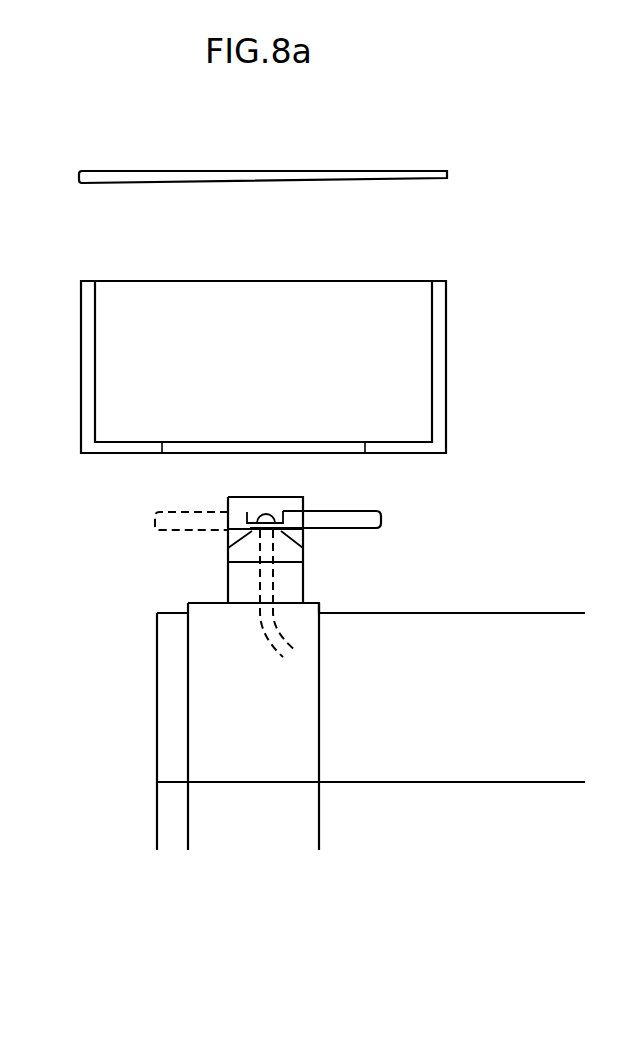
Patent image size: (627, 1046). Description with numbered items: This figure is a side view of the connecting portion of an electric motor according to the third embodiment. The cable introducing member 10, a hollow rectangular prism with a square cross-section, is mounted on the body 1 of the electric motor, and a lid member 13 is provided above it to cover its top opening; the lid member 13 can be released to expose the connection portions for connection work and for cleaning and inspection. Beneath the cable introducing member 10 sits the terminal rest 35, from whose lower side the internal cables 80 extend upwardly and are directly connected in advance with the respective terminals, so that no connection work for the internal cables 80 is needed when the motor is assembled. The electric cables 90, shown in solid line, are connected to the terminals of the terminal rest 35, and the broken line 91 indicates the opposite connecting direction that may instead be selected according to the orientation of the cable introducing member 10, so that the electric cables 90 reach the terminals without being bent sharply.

The body 1 is at (151, 727).
The cable introducing member 10 is at (433, 360).
The lid member 13 is at (398, 170).
The terminal rest 35 is at (314, 558).
The internal cables 80 is at (268, 645).
The electric cables 90 is at (340, 512).
The broken line 91 is at (188, 510).